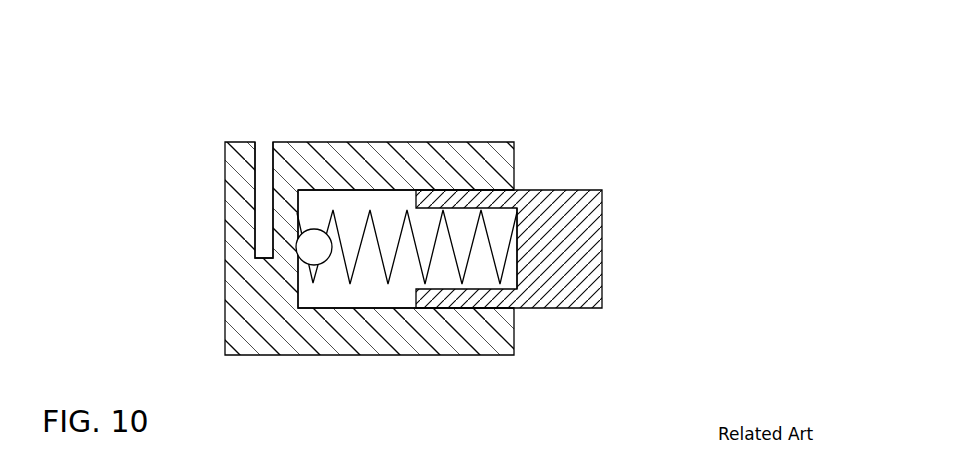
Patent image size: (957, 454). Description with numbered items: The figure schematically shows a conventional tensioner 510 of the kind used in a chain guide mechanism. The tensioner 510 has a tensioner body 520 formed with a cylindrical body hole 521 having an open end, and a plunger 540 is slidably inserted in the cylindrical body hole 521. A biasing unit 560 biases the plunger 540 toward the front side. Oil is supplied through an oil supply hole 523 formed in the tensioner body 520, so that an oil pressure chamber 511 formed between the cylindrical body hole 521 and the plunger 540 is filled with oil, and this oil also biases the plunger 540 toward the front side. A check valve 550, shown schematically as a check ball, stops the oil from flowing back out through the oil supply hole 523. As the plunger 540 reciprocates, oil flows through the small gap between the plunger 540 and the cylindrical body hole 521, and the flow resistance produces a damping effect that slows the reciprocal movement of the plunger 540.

The tensioner 510 is at (571, 109).
The oil pressure chamber 511 is at (368, 270).
The tensioner body 520 is at (318, 341).
The cylindrical body hole 521 is at (388, 212).
The oil supply hole 523 is at (264, 140).
The plunger 540 is at (588, 265).
The check valve 550 is at (297, 248).
The biasing unit 560 is at (468, 257).